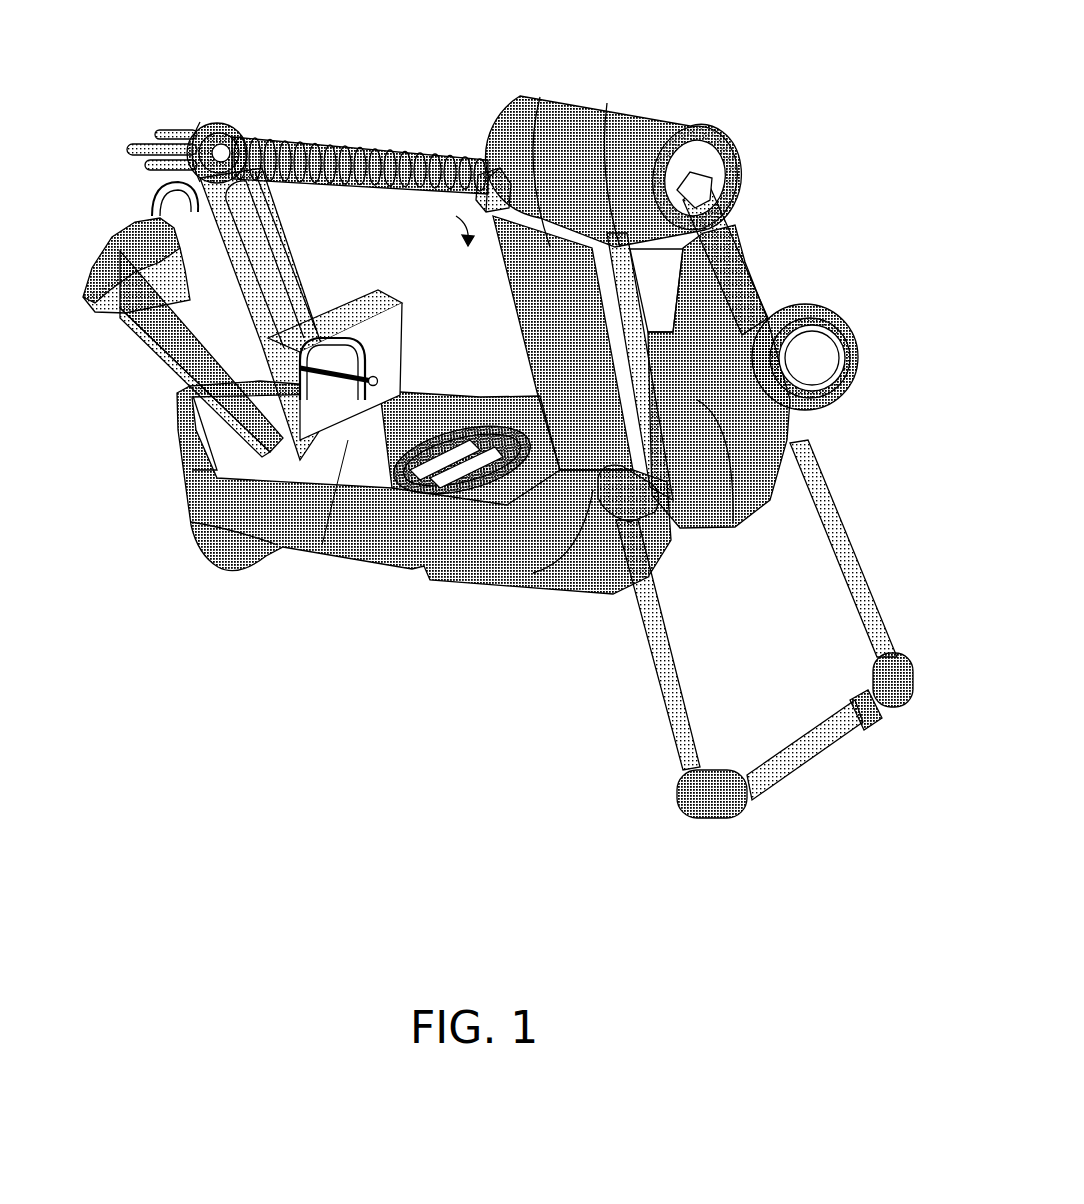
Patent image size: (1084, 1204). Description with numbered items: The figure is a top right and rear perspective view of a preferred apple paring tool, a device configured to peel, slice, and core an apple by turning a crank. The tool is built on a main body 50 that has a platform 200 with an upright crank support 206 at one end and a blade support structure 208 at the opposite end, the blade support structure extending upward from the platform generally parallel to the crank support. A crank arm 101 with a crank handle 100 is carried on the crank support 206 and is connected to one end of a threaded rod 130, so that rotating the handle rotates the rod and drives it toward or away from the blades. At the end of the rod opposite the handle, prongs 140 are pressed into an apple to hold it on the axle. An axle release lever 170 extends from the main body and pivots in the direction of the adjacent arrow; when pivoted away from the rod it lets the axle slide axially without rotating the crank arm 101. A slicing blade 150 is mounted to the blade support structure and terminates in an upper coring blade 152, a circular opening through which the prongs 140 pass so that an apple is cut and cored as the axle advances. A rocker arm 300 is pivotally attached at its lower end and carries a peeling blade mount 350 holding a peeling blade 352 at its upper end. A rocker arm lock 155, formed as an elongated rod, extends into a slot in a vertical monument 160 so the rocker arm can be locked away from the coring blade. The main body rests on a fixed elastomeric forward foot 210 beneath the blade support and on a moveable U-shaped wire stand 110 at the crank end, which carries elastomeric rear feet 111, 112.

The main body 50 is at (507, 440).
The crank handle 100 is at (818, 306).
The crank arm 101 is at (747, 253).
The moveable stand 110 is at (794, 648).
The rear foot 111 is at (692, 812).
The rear foot 112 is at (893, 700).
The threaded rod 130 is at (330, 135).
The prongs 140 is at (160, 130).
The slicing blade 150 is at (295, 258).
The coring blade 152 is at (238, 120).
The rocker arm lock 155 is at (323, 543).
The vertical monument 160 is at (352, 336).
The axle release lever 170 is at (495, 170).
The platform 200 is at (371, 516).
The crank support 206 is at (512, 318).
The blade support structure 208 is at (178, 450).
The forward foot 210 is at (212, 560).
The rocker arm 300 is at (177, 337).
The peeling blade mount 350 is at (118, 246).
The peeling blade 352 is at (152, 180).